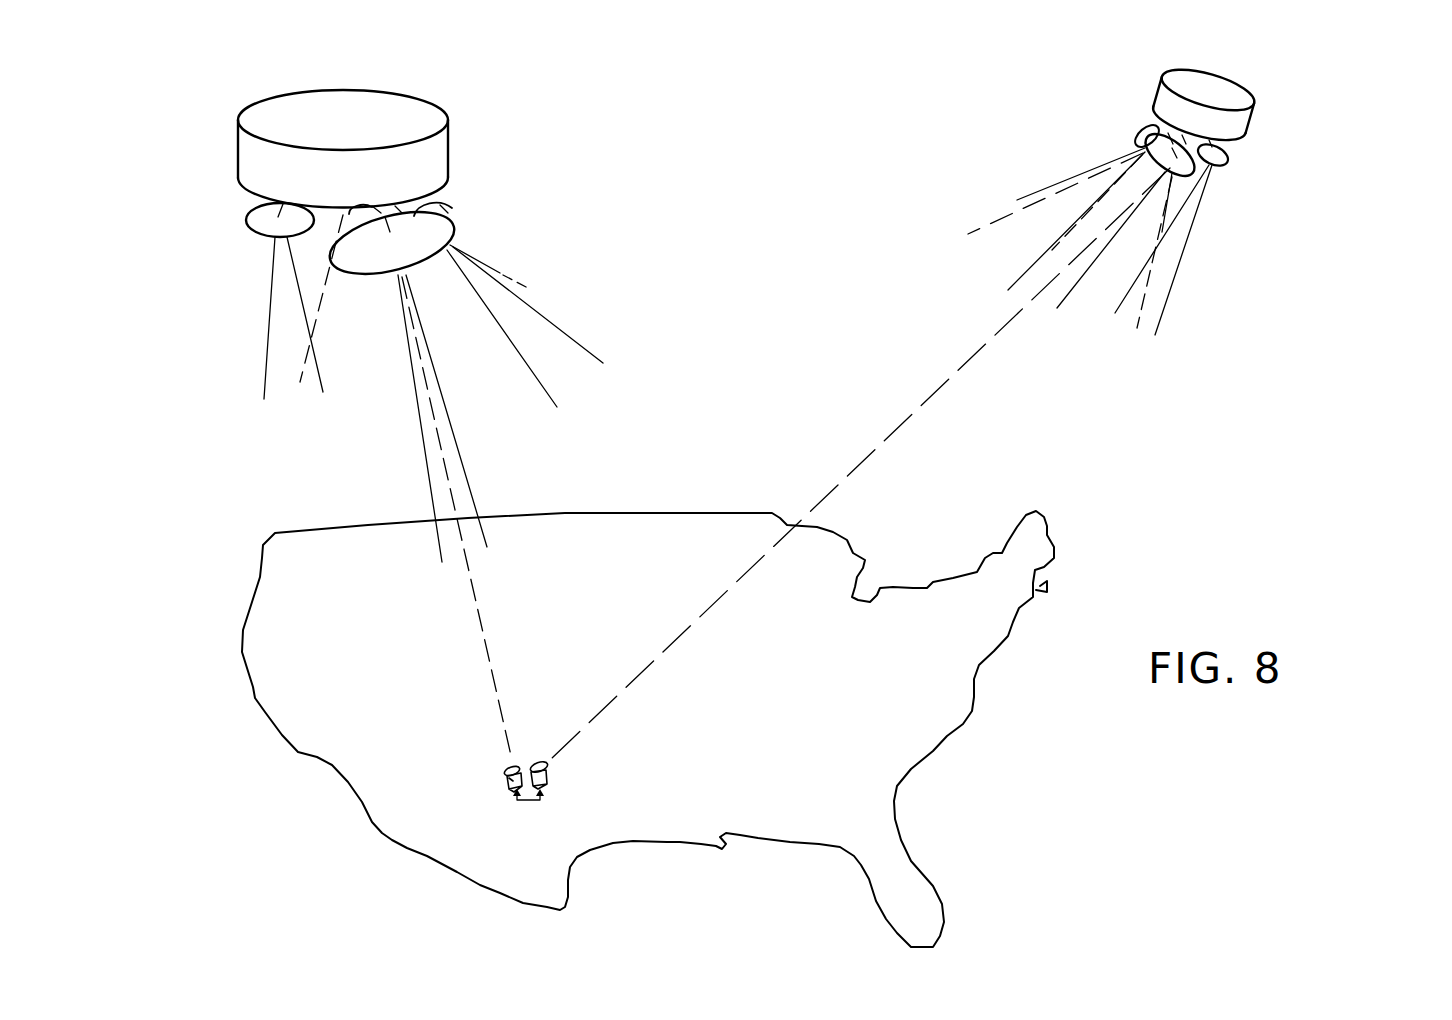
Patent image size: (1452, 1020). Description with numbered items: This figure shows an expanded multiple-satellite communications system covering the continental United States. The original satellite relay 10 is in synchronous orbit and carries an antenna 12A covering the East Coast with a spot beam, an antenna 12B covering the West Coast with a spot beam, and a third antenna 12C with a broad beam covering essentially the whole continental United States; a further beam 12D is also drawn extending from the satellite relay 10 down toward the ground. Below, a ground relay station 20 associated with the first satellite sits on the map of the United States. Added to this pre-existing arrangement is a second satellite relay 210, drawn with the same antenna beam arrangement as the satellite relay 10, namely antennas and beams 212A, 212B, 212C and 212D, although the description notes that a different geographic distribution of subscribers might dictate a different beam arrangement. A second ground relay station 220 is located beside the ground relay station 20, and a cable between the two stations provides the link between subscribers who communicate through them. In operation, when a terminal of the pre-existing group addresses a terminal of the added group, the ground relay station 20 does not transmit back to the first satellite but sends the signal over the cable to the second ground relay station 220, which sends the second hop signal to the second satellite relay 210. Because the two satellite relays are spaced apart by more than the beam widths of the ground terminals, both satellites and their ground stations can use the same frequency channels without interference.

The satellite relay 10 is at (204, 216).
The antenna 12A is at (458, 242).
The antenna 12B is at (273, 298).
The third antenna 12C is at (512, 277).
The first satellite beam to ground station 12D is at (405, 341).
The ground relay station 20 is at (470, 792).
The second satellite relay 210 is at (1305, 101).
The second satellite antenna 212A is at (1207, 185).
The second satellite beam 212B is at (1045, 189).
The second satellite beam 212C is at (1160, 253).
The second satellite beam to ground station 212D is at (1082, 277).
The second ground relay station 220 is at (578, 762).